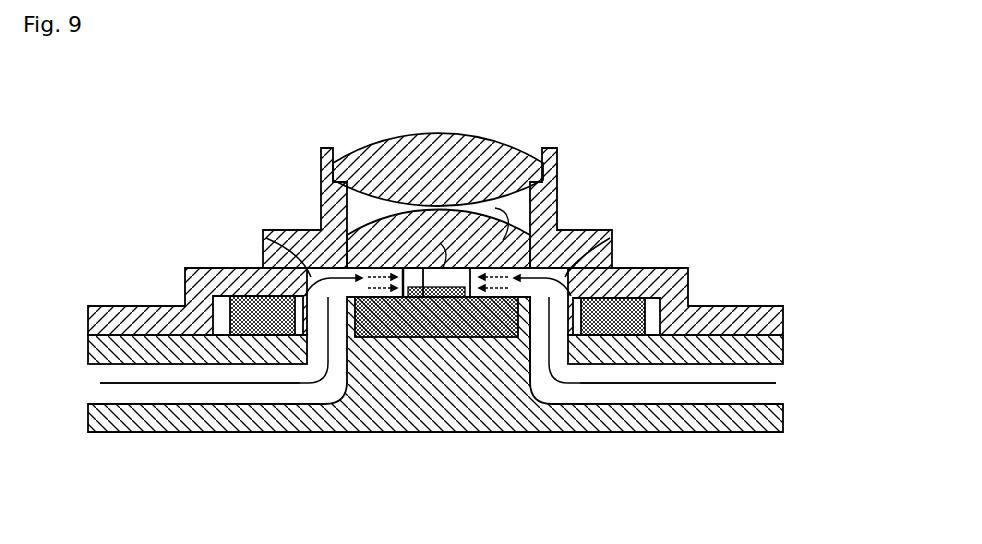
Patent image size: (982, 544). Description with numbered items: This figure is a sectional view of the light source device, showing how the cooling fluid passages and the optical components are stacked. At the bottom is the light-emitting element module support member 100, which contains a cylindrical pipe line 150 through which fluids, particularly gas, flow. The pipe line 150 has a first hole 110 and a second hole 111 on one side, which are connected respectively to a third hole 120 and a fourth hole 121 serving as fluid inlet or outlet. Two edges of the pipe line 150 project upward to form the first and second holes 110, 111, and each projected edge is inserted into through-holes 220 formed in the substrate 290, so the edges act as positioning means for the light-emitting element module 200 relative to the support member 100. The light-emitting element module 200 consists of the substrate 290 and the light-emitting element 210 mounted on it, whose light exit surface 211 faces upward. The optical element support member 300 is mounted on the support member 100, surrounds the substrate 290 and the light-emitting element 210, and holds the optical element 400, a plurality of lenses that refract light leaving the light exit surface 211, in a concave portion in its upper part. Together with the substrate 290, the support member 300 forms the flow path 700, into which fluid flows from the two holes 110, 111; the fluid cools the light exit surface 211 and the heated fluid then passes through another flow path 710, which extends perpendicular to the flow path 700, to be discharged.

The light-emitting element module support member 100 is at (305, 430).
The first hole 110 is at (605, 302).
The second hole 111 is at (268, 307).
The third hole 120 is at (677, 395).
The fourth hole 121 is at (178, 393).
The pipe line 150 is at (240, 393).
The light-emitting element module 200 is at (466, 333).
The light-emitting element 210 is at (437, 300).
The light exit surface 211 is at (388, 223).
The through-holes 220 is at (283, 312).
The substrate 290 is at (396, 300).
The optical element support member 300 is at (321, 212).
The optical element 400 is at (497, 170).
The flow path 700 is at (262, 240).
The another flow path 710 is at (420, 186).